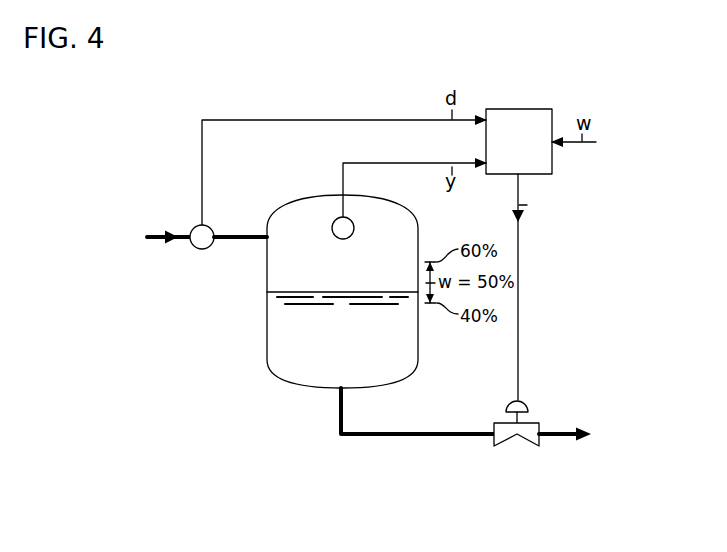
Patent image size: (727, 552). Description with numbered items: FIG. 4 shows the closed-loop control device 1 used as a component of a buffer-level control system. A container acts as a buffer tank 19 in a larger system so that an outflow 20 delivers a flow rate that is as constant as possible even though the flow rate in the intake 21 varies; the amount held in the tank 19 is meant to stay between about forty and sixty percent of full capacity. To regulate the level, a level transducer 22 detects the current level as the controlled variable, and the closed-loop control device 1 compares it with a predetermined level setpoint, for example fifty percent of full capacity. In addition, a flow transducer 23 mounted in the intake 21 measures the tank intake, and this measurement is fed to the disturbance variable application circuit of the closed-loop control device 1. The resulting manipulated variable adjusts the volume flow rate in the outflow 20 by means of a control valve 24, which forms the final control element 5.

The closed-loop control device 1 is at (517, 109).
The final control element 5 is at (555, 310).
The control valve 24 is at (547, 395).
The buffer tank 19 is at (267, 312).
The outflow 20 is at (565, 440).
The intake 21 is at (158, 232).
The level transducer 22 is at (332, 229).
The flow transducer 23 is at (202, 249).